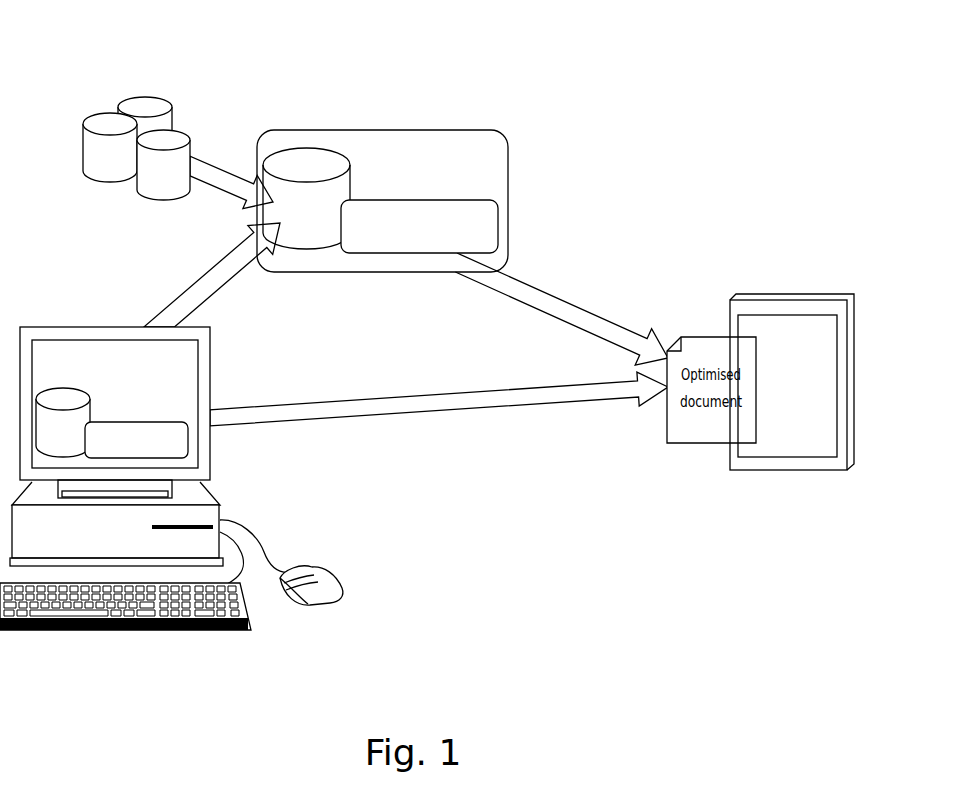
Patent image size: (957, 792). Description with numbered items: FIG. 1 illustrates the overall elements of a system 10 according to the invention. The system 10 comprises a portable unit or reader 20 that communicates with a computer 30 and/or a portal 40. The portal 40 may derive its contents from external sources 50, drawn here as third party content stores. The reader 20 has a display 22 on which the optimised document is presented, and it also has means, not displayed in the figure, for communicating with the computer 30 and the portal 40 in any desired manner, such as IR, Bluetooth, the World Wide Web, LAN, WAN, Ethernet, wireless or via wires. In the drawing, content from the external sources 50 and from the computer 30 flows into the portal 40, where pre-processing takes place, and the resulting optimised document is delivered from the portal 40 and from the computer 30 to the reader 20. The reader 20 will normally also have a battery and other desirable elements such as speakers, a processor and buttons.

The system 10 is at (658, 51).
The portable unit or reader 20 is at (793, 291).
The display 22 is at (783, 334).
The computer 30 is at (356, 598).
The portal 40 is at (511, 176).
The external sources 50 is at (118, 91).